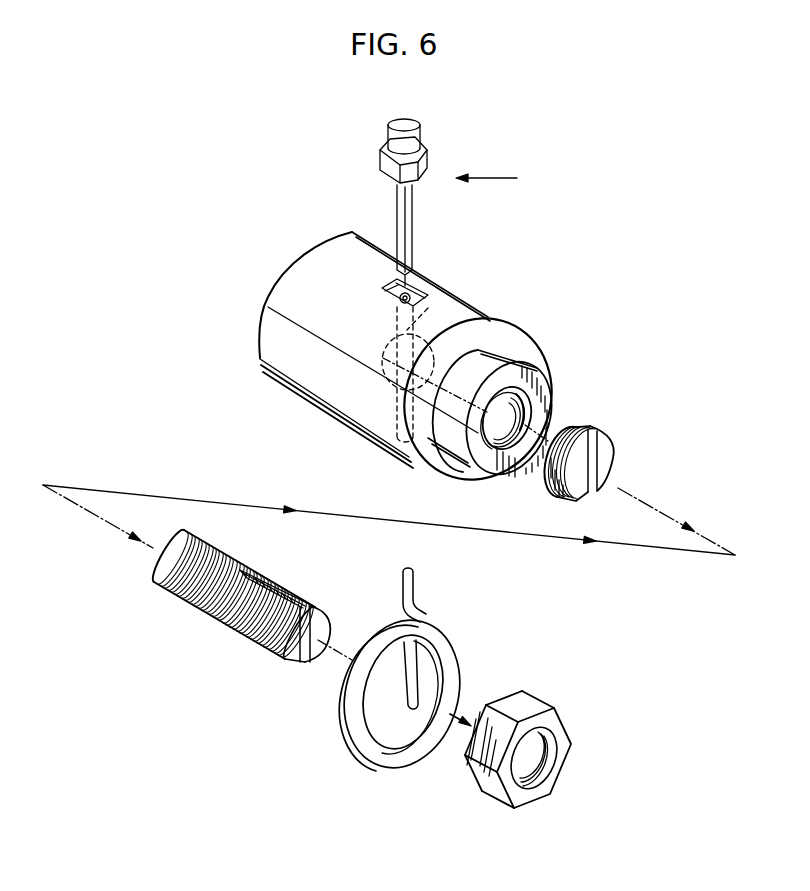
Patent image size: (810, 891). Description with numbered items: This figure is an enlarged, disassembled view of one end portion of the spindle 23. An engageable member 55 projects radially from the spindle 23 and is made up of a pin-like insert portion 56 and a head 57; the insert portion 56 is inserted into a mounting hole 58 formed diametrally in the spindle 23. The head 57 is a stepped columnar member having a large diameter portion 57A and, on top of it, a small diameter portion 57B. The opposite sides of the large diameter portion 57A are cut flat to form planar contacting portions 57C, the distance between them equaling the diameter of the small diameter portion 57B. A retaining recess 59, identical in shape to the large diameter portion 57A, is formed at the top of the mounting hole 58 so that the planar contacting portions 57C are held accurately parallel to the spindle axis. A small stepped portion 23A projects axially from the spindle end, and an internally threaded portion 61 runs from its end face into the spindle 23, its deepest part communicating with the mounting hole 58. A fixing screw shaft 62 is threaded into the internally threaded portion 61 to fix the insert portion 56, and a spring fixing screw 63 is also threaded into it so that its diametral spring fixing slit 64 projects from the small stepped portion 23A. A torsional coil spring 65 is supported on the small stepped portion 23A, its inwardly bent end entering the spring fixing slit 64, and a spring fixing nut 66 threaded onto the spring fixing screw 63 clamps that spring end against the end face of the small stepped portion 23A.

The spindle 23 is at (468, 320).
The small stepped portion 23A is at (530, 383).
The engageable member 55 is at (502, 180).
The insert portion 56 is at (413, 217).
The head 57 is at (435, 146).
The large diameter portion 57A is at (422, 162).
The small diameter portion 57B is at (418, 121).
The planar contacting portions 57C is at (385, 167).
The mounting hole 58 is at (428, 308).
The retaining recess 59 is at (408, 293).
The internally threaded portion 61 is at (530, 417).
The fixing screw shaft 62 is at (607, 453).
The spring fixing screw 63 is at (195, 605).
The spring fixing slit 64 is at (282, 593).
The torsional coil spring 65 is at (455, 657).
The spring fixing nut 66 is at (528, 698).